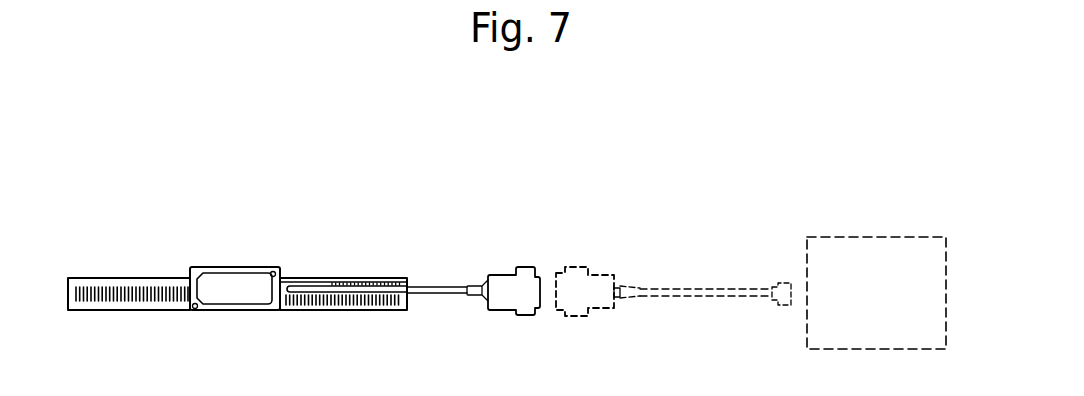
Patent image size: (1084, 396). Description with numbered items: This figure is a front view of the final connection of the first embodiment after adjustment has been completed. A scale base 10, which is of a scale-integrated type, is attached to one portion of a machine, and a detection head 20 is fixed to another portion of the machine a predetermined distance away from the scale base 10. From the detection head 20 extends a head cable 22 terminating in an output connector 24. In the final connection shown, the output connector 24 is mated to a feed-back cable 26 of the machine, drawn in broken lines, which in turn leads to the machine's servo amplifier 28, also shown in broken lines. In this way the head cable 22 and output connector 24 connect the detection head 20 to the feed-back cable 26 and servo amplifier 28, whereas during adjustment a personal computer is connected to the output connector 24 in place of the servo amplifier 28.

The scale base 10 is at (137, 285).
The detection head 20 is at (228, 267).
The head cable 22 is at (437, 290).
The output connector 24 is at (507, 280).
The feed-back cable 26 is at (679, 290).
The servo amplifier 28 is at (886, 236).